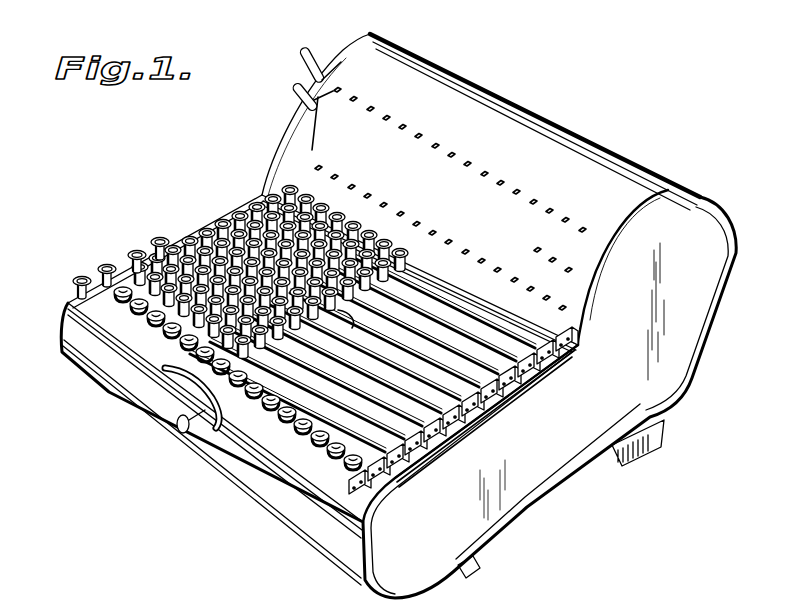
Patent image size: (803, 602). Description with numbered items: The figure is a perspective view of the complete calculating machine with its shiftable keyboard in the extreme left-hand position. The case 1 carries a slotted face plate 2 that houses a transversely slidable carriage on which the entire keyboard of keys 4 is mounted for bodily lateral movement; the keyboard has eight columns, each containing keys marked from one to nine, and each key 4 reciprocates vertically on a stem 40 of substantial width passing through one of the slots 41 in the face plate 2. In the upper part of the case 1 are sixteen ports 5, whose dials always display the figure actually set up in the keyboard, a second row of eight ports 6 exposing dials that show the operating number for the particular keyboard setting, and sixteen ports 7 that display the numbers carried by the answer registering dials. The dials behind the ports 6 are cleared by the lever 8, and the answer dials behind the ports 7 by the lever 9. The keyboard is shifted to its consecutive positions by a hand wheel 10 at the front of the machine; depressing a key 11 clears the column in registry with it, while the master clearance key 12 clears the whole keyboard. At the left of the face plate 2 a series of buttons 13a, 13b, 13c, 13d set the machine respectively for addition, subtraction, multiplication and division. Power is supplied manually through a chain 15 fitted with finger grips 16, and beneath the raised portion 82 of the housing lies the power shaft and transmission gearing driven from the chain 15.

The case 1 is at (553, 470).
The slotted face plate 2 is at (252, 493).
The keys 4 is at (198, 240).
The ports 5 is at (546, 302).
The ports 6 is at (552, 262).
The ports 7 is at (580, 229).
The lever 8 is at (303, 97).
The lever 9 is at (312, 50).
The hand wheel 10 is at (165, 422).
The key 11 is at (125, 300).
The master clearance key 12 is at (163, 378).
The button 13a is at (82, 276).
The button 13b is at (107, 264).
The button 13c is at (137, 250).
The button 13d is at (160, 237).
The chain 15 is at (487, 411).
The finger grips 16 is at (470, 430).
The key stems 40 is at (349, 322).
The slots 41 is at (400, 346).
The raised portion 82 is at (558, 143).